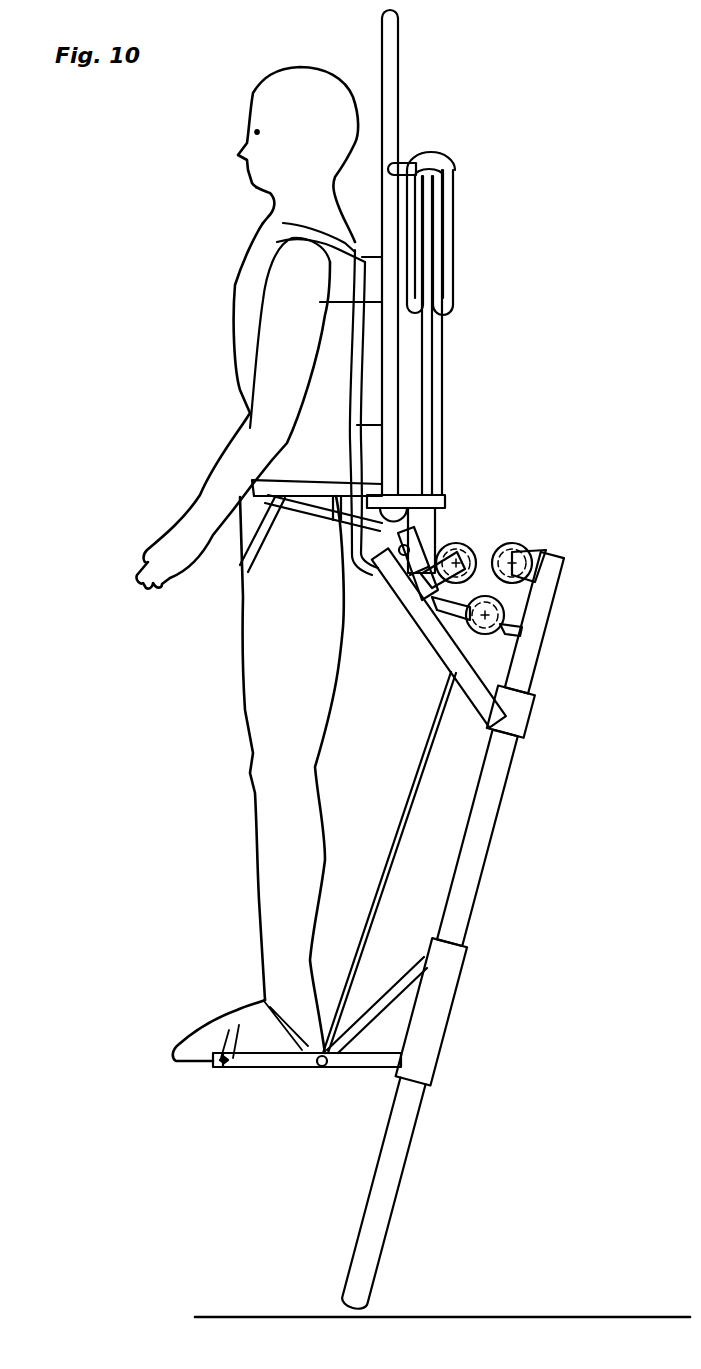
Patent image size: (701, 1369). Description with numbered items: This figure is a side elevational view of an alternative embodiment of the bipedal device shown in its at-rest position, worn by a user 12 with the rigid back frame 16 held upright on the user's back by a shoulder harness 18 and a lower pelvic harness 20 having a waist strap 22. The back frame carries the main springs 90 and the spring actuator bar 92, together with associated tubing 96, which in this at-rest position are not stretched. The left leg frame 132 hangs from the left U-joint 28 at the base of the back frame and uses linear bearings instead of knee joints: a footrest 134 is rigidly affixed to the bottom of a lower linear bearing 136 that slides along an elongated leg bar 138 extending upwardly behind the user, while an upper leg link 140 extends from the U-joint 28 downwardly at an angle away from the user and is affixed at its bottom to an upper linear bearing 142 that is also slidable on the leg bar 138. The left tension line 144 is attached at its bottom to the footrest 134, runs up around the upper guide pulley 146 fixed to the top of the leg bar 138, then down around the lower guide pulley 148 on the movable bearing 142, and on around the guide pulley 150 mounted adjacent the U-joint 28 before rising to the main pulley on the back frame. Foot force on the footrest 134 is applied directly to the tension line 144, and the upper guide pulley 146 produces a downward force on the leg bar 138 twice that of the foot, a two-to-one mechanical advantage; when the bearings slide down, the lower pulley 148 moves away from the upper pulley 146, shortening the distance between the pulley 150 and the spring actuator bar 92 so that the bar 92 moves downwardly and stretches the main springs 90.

The user / person 12 is at (246, 323).
The back frame 16 is at (399, 97).
The shoulder harness 18 is at (283, 223).
The lower pelvic harness 20 is at (262, 542).
The waist strap 22 is at (302, 490).
The left U-joint 28 is at (392, 577).
The main springs 90 is at (456, 240).
The spring actuator bar 92 is at (448, 305).
The tubes 96 is at (443, 440).
The left leg frame 132 is at (483, 889).
The footrest 134 is at (257, 1068).
The lower linear bearing 136 is at (440, 1012).
The leg bar 138 is at (500, 807).
The upper leg link 140 is at (442, 637).
The upper linear bearing 142 is at (534, 683).
The left tension line 144 is at (414, 788).
The upper guide pulley 146 is at (521, 546).
The lower guide pulley 148 is at (497, 630).
The guide pulley 150 is at (455, 543).